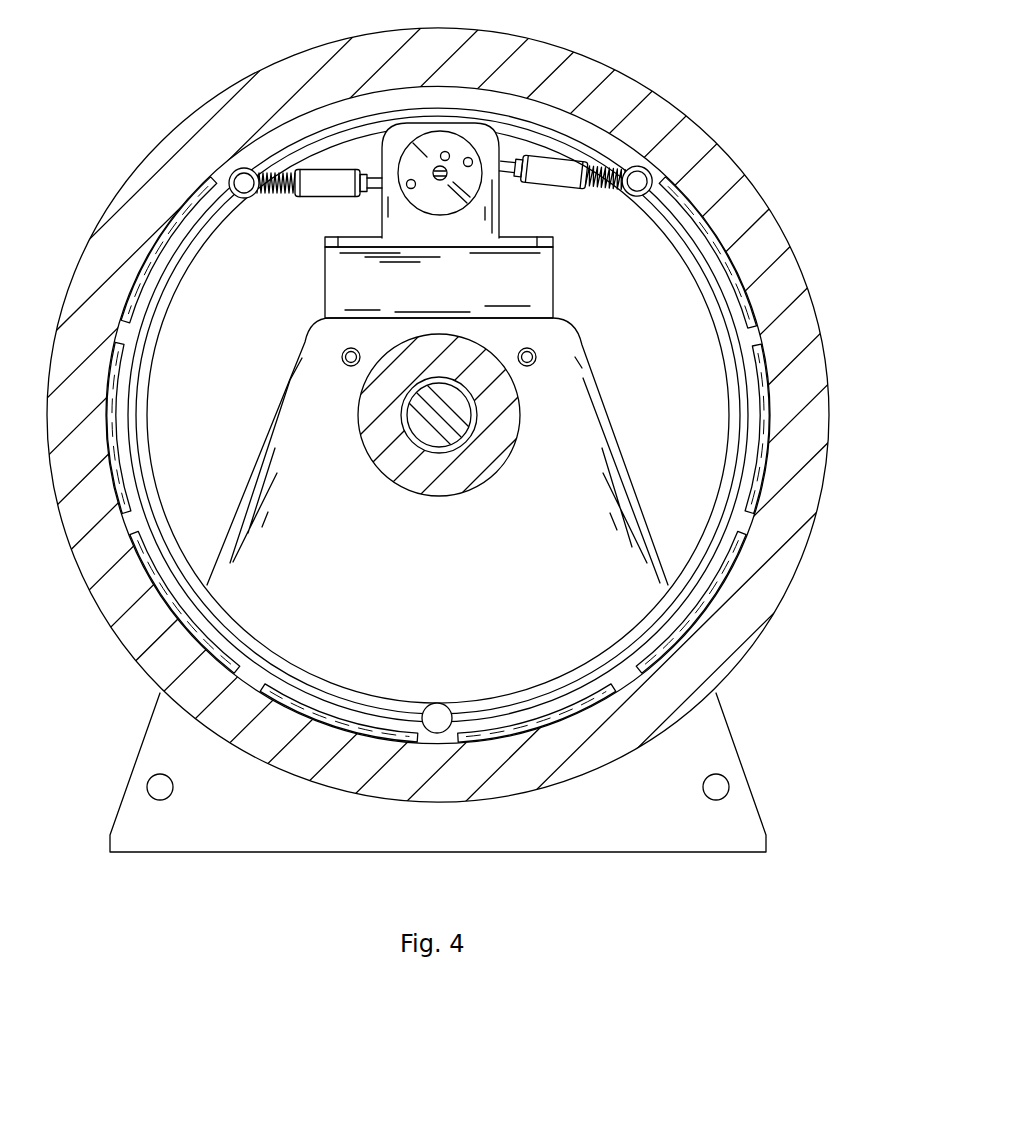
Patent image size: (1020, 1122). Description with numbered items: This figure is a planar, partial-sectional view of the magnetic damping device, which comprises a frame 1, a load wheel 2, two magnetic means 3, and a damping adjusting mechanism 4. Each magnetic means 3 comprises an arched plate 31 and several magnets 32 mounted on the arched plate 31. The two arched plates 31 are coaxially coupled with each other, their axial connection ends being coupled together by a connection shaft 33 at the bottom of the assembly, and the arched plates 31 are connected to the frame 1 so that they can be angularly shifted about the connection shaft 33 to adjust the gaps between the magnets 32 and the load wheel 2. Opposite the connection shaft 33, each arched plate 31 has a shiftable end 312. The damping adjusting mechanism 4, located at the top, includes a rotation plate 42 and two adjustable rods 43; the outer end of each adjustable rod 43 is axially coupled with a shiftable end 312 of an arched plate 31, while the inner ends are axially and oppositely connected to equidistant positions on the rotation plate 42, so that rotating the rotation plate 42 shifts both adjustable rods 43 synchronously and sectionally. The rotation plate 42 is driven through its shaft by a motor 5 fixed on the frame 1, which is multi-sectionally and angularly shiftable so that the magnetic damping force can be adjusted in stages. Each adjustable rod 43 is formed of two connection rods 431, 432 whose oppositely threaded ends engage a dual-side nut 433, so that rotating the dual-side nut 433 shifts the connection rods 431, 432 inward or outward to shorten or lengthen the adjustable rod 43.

The frame 1 is at (757, 805).
The load wheel 2 is at (510, 415).
The magnetic means 3 is at (445, 425).
The arched plate 31 is at (153, 335).
The shiftable end 312 is at (163, 257).
The magnet 32 is at (92, 240).
The connection shaft 33 is at (435, 713).
The damping adjusting mechanism 4 is at (435, 297).
The rotation plate 42 is at (427, 155).
The adjustable rod 43 is at (455, 166).
The connection rod 431 is at (728, 112).
The connection rod 432 is at (377, 187).
The dual-side nut 433 is at (323, 192).
The motor 5 is at (443, 124).